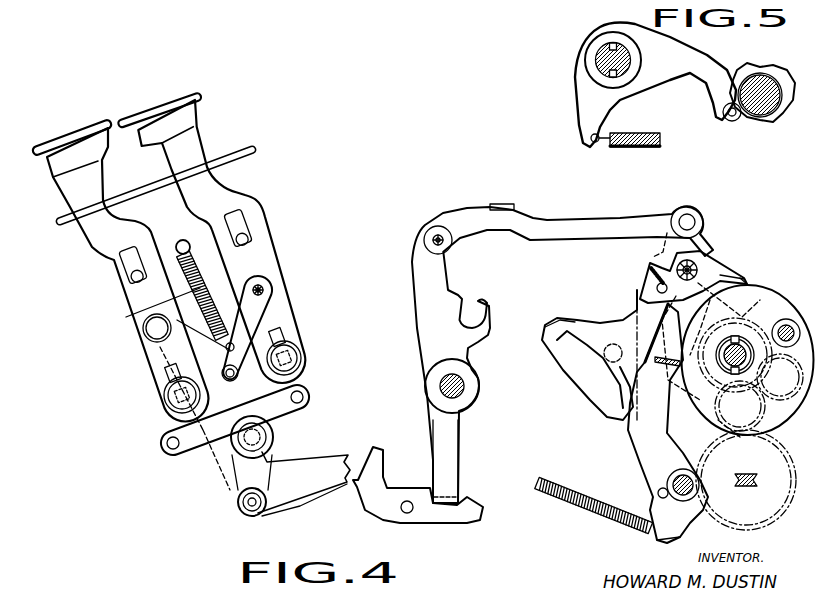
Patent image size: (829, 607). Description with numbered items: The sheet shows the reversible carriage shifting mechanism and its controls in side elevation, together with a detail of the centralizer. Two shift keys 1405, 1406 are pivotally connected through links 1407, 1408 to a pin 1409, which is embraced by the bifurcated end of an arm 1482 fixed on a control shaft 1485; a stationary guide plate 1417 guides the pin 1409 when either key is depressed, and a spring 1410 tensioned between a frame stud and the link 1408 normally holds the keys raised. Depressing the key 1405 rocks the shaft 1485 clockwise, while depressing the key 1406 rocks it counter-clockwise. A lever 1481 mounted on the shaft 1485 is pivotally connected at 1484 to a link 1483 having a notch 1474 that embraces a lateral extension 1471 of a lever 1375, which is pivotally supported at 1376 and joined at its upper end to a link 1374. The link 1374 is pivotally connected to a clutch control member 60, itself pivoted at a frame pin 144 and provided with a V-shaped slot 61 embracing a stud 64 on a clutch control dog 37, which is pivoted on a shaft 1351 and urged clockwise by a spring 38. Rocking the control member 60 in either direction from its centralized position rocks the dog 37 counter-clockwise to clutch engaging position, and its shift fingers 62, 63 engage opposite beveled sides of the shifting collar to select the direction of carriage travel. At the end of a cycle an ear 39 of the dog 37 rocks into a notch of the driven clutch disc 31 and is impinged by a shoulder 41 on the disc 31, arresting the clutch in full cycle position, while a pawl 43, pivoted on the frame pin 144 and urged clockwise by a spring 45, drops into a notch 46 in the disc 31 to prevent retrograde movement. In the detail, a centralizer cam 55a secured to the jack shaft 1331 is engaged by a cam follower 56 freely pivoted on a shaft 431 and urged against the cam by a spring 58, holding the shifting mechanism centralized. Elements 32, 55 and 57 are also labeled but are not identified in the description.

In FIG. 4, the shift key 1405 is at (80, 124).
In FIG. 4, the shift key 1406 is at (146, 109).
In FIG. 4, the spring 1410 is at (161, 319).
In FIG. 4, the link 1407 is at (226, 372).
In FIG. 4, the pin 1409 is at (195, 385).
In FIG. 4, the arm 1482 is at (218, 390).
In FIG. 4, the link 1408 is at (258, 315).
In FIG. 4, the stationary guide plate 1417 is at (165, 437).
In FIG. 4, the control shaft 1485 is at (272, 438).
In FIG. 4, the lever 1481 is at (275, 468).
In FIG. 4, the pivotal connection 1484 is at (253, 517).
In FIG. 4, the link 1483 is at (297, 502).
In FIG. 4, the link 1374 is at (574, 230).
In FIG. 4, the pivot 1376 is at (464, 392).
In FIG. 4, the lever 1375 is at (455, 457).
In FIG. 4, the notch 1474 is at (462, 497).
In FIG. 4, the lateral extension 1471 is at (447, 500).
In FIG. 4, the frame pin 144 is at (692, 264).
In FIG. 4, the spring 45 is at (648, 266).
In FIG. 4, the pawl 43 is at (720, 272).
In FIG. 4, the notch 46 is at (745, 282).
In FIG. 4, the driven clutch disc 31 is at (773, 302).
In FIG. 4, the pin 32 is at (788, 327).
In FIG. 4, the shift finger 63 is at (736, 307).
In FIG. 4, the stud 64 is at (615, 353).
In FIG. 4, the ear 39 is at (675, 351).
In FIG. 4, the V-shaped slot 61 is at (582, 357).
In FIG. 4, the clutch control member 60 is at (600, 397).
In FIG. 4, the shoulder 41 is at (672, 388).
In FIG. 4, the shift finger 62 is at (683, 348).
In FIG. 4, the hub 55 is at (720, 420).
In FIG. 4, the roller 57 is at (776, 420).
In FIG. 4, the clutch control dog 37 is at (637, 440).
In FIG. 4, the shaft 1351 is at (670, 485).
In FIG. 4, the jack shaft 1331 is at (740, 480).
In FIG. 5, the jack shaft 1331 is at (767, 120).
In FIG. 4, the spring 38 is at (593, 517).
In FIG. 4, the cam follower 56 is at (727, 518).
In FIG. 5, the cam follower 56 is at (707, 80).
In FIG. 5, the shaft 431 is at (600, 65).
In FIG. 5, the spring 58 is at (655, 120).
In FIG. 5, the centralizer cam 55a is at (770, 72).